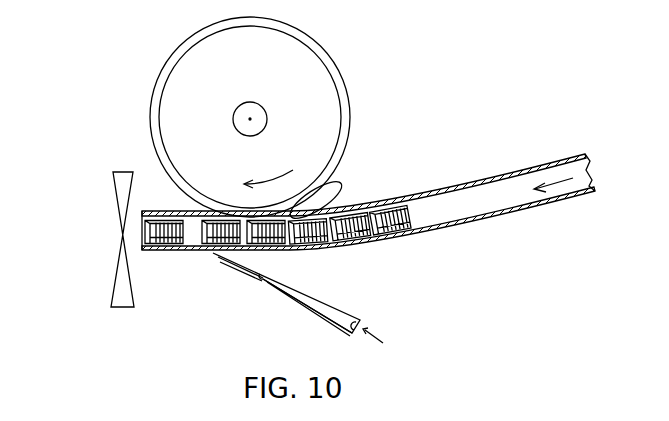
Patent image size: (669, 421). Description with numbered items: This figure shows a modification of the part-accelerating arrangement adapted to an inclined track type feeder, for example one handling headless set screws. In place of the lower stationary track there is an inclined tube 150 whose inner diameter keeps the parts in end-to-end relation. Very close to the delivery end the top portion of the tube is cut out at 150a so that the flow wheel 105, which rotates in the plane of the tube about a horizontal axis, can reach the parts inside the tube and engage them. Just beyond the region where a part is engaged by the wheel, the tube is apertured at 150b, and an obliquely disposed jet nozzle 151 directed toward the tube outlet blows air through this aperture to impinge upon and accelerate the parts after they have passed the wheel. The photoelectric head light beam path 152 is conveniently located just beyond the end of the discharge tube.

The flow wheel 105 is at (348, 93).
The inclined tube 150 is at (486, 178).
The tube cutout 150a is at (343, 182).
The tube aperture 150b is at (210, 253).
The jet nozzle 151 is at (336, 306).
The photoelectric head light beam path 152 is at (117, 283).